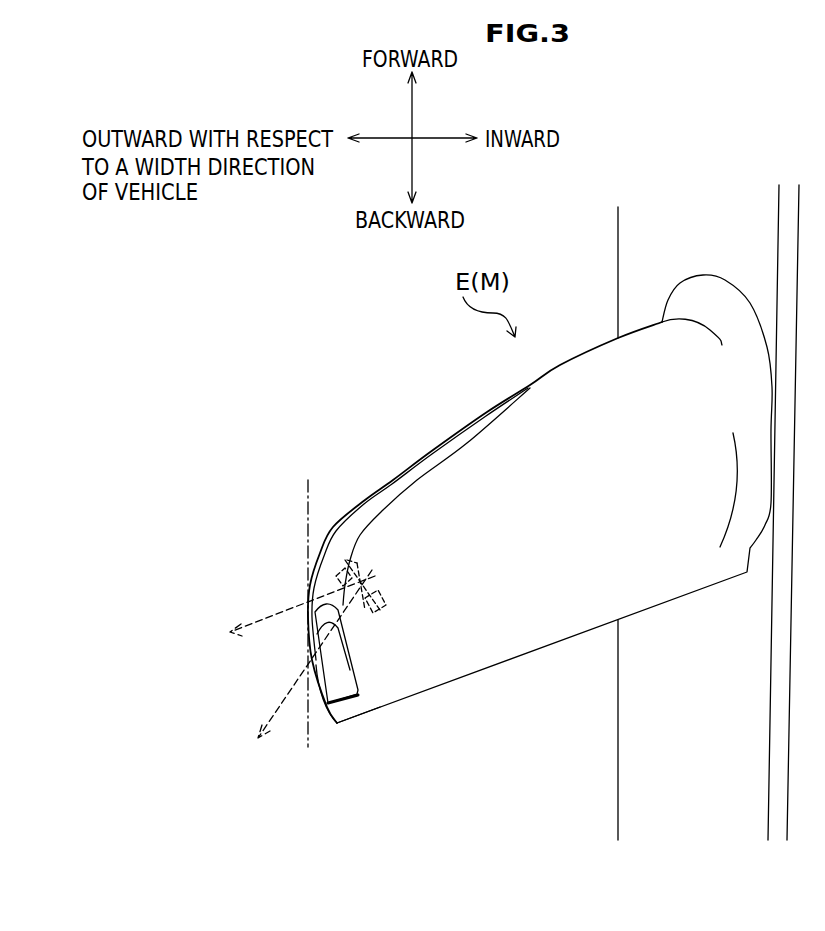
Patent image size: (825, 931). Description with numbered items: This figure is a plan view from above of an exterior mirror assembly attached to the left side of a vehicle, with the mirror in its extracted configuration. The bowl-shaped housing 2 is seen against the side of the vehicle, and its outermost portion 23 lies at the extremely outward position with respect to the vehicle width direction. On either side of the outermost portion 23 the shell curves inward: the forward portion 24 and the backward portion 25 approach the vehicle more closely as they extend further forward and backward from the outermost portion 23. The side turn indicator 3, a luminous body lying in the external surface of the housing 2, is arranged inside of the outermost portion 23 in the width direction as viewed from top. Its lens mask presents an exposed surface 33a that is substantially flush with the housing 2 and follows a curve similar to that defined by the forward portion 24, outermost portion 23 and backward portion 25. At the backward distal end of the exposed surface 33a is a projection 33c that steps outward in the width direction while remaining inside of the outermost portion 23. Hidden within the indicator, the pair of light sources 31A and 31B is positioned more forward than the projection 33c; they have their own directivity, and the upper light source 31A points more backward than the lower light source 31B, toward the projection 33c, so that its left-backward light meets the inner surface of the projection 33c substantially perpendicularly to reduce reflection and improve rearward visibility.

The housing 2 is at (417, 683).
The side turn indicator 3 is at (364, 496).
The exposed surface 33a is at (332, 560).
The outermost portion 23 is at (313, 605).
The forward portion 24 is at (362, 497).
The backward portion 25 is at (320, 700).
The upper light source 31A is at (386, 606).
The lower light source 31B is at (353, 557).
The projection 33c is at (322, 630).